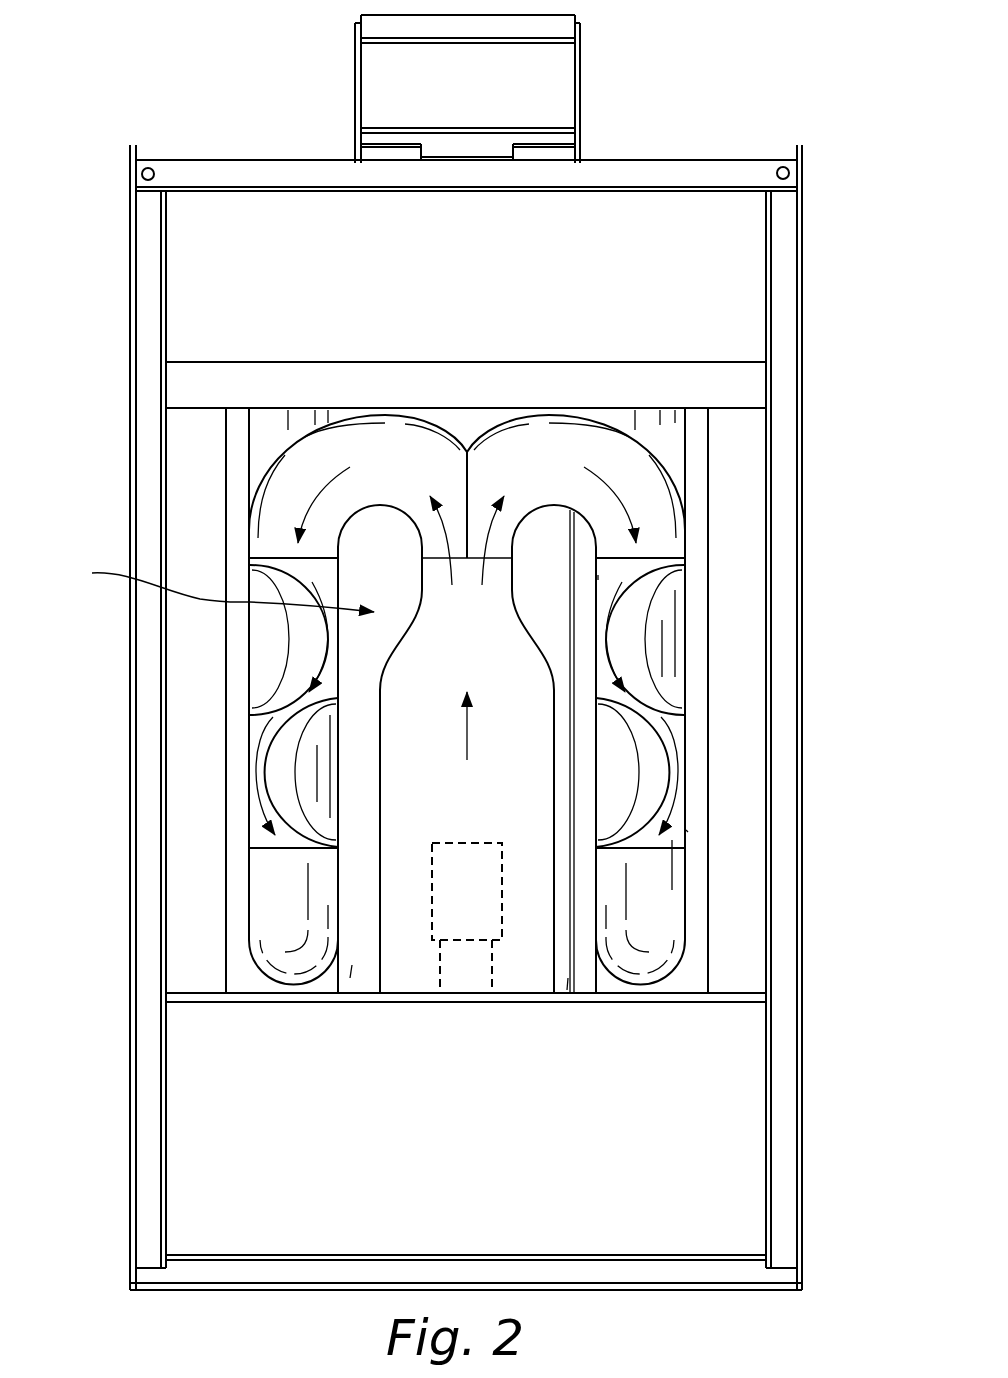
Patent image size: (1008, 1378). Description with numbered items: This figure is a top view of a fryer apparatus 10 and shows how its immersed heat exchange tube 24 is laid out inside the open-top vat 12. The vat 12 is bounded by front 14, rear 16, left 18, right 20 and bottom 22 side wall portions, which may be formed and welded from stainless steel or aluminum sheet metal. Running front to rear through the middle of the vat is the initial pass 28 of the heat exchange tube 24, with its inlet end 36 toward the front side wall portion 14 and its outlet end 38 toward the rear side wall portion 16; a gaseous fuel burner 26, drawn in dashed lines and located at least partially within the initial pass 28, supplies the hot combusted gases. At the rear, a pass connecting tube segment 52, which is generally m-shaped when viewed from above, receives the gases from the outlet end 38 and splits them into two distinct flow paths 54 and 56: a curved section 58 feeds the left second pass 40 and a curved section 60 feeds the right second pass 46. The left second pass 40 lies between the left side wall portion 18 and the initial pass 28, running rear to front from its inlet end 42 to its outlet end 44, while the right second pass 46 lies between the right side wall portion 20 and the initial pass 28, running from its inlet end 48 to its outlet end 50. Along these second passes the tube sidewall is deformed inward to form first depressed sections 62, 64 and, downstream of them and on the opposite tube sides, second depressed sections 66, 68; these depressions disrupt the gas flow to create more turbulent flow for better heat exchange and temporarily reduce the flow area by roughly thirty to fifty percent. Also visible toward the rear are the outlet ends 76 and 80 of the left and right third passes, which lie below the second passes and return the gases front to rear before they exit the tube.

The fryer apparatus 10 is at (108, 317).
The open-top vat 12 is at (216, 588).
The front side wall portion 14 is at (425, 993).
The rear side wall portion 16 is at (478, 393).
The left side wall portion 18 is at (226, 648).
The right side wall portion 20 is at (708, 643).
The bottom side wall portion 22 is at (365, 978).
The heat exchange tube 24 is at (686, 833).
The gaseous fuel burner 26 is at (462, 887).
The initial pass 28 is at (527, 668).
The inlet end 36 is at (556, 972).
The outlet end 38 is at (597, 578).
The left second pass 40 is at (253, 727).
The inlet end 42 is at (250, 563).
The outlet end 44 is at (280, 895).
The right second pass 46 is at (681, 727).
The inlet end 48 is at (685, 559).
The outlet end 50 is at (657, 883).
The pass connecting tube segment 52 is at (522, 445).
The flow path 54 is at (448, 534).
The flow path 56 is at (490, 533).
The curved section 58 is at (385, 442).
The curved section 60 is at (660, 452).
The first depressed section 62 is at (298, 660).
The first depressed section 64 is at (633, 663).
The second depressed section 66 is at (287, 764).
The second depressed section 68 is at (640, 777).
The outlet end 76 is at (260, 437).
The outlet end 80 is at (673, 443).